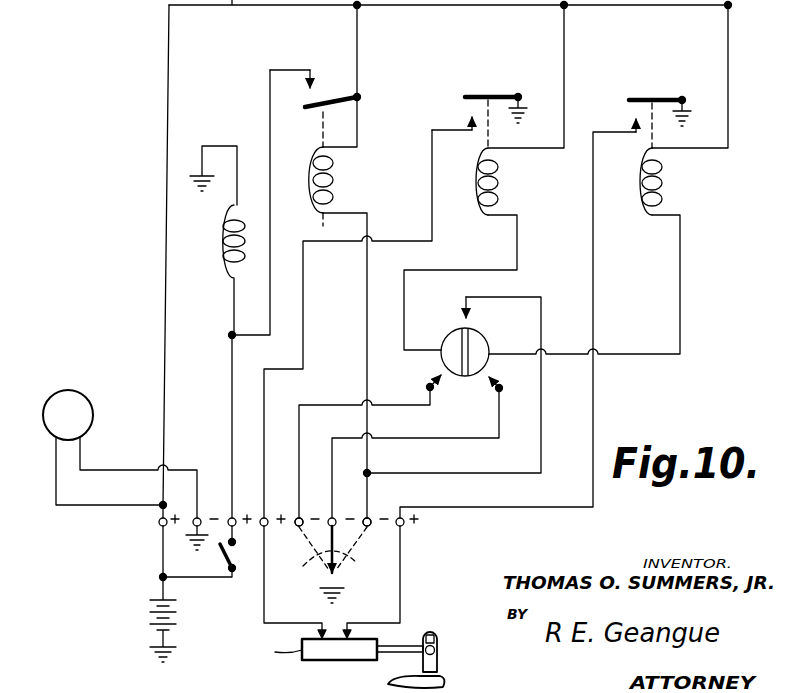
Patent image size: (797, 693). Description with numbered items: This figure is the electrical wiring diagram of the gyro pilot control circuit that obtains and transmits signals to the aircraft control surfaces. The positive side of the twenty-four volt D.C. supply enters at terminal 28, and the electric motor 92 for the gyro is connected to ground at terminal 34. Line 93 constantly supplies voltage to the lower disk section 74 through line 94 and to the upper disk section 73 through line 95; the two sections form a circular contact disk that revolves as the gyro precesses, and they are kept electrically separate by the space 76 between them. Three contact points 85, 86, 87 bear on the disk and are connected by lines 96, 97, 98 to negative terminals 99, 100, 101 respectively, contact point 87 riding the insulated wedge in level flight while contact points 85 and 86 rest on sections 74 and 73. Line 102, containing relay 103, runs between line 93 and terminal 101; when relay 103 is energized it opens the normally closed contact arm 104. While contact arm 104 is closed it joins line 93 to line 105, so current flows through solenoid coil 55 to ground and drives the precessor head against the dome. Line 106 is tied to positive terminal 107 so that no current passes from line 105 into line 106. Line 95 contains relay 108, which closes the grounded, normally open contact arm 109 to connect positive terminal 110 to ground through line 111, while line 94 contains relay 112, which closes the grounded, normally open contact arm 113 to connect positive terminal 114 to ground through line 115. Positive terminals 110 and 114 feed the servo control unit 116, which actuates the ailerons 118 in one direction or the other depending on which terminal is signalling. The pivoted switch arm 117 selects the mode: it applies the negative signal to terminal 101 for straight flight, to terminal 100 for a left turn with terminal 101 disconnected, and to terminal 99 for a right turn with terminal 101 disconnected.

The terminal 28 is at (159, 523).
The terminal 34 is at (195, 516).
The solenoid coil 55 is at (222, 245).
The upper section 73 is at (450, 345).
The lower section 74 is at (481, 341).
The space 76 is at (464, 377).
The contact point 85 is at (495, 371).
The contact point 86 is at (435, 371).
The contact point 87 is at (460, 323).
The electric motor 92 is at (89, 405).
The line 93 is at (164, 293).
The line 94 is at (728, 117).
The line 95 is at (564, 91).
The line 96 is at (499, 417).
The line 97 is at (326, 405).
The line 98 is at (541, 311).
The negative terminal 99 is at (331, 516).
The negative terminal 100 is at (298, 516).
The negative terminal 101 is at (369, 518).
The line 102 is at (367, 321).
The relay 103 is at (334, 179).
The contact arm 104 is at (328, 98).
The line 105 is at (270, 94).
The line 106 is at (232, 380).
The positive terminal 107 is at (231, 516).
The relay 108 is at (498, 169).
The contact arm 109 is at (490, 95).
The positive terminal 110 is at (263, 516).
The line 111 is at (303, 296).
The relay 112 is at (662, 183).
The contact arm 113 is at (665, 98).
The positive terminal 114 is at (404, 523).
The line 115 is at (593, 407).
The servo control unit 116 is at (354, 648).
The pivoted switch arm 117 is at (316, 567).
The ailerons 118 is at (444, 684).